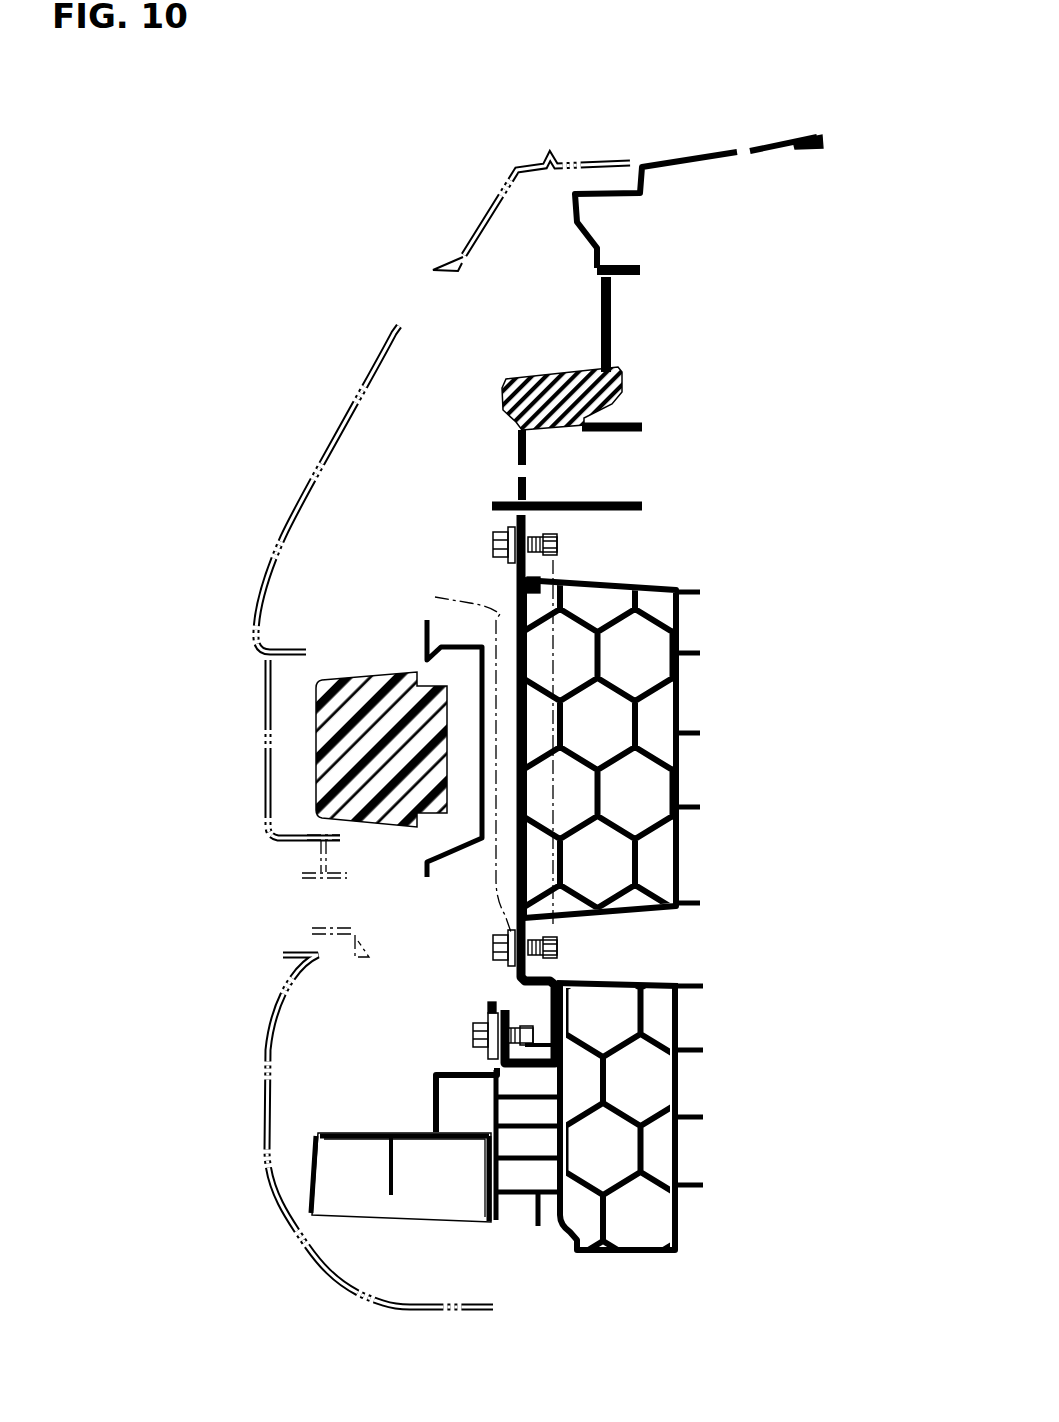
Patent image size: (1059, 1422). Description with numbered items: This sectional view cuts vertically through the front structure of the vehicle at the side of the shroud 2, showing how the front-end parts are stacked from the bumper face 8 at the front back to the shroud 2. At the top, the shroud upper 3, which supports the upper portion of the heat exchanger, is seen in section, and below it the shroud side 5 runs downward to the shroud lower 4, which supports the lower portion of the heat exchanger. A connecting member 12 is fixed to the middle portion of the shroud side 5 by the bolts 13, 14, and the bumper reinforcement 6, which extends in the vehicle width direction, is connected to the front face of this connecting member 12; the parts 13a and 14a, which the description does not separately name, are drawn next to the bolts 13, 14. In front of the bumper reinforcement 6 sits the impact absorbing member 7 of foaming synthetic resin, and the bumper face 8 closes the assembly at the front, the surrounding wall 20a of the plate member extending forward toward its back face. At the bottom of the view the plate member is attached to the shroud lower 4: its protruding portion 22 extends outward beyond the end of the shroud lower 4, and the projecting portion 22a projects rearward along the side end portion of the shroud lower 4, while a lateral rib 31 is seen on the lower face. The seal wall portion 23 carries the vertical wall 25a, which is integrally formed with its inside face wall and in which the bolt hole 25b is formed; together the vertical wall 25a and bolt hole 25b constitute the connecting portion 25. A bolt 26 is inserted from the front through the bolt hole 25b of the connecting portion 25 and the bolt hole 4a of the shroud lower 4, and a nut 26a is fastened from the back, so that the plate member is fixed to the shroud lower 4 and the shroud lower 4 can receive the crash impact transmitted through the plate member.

The shroud 2 is at (824, 118).
The bumper face 8 is at (527, 156).
The shroud upper 3 is at (628, 386).
The bolt 13 is at (493, 546).
The upper nut 13a is at (553, 531).
The connecting member 12 is at (453, 755).
The shroud side 5 is at (680, 628).
The impact absorbing member 7 is at (382, 674).
The bumper reinforcement 6 is at (478, 848).
The bolt 14 is at (493, 946).
The lower nut 14a is at (556, 944).
The connecting portion 25 is at (408, 1011).
The vertical wall 25a is at (489, 1005).
The bolt hole 25b is at (443, 1032).
The bolt 26 is at (470, 1036).
The nut 26a is at (545, 1032).
The bolt hole 4a is at (540, 1045).
The shroud lower 4 is at (623, 1255).
The seal wall portion 23 is at (433, 1110).
The protruding portion 22 is at (398, 1170).
The projecting portion 22a is at (460, 1140).
The lateral rib 31 is at (392, 1197).
The surrounding wall 20a is at (310, 1177).